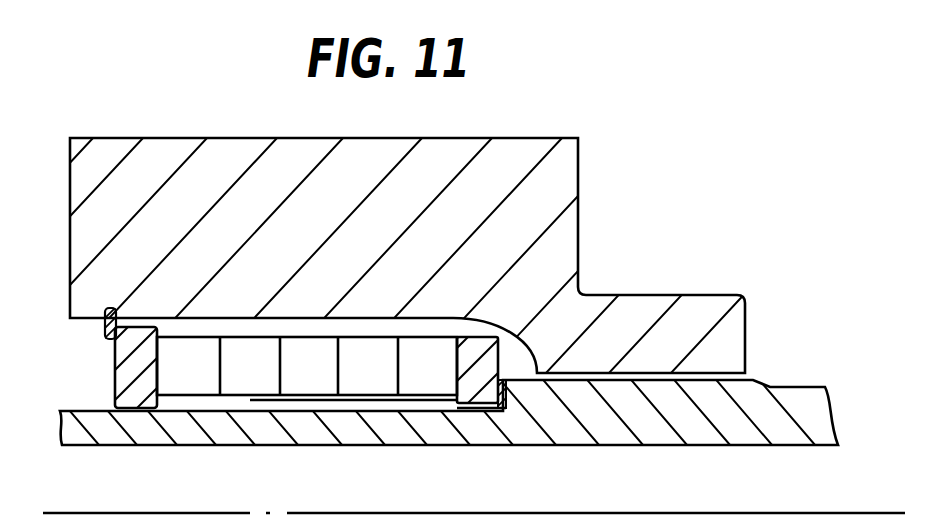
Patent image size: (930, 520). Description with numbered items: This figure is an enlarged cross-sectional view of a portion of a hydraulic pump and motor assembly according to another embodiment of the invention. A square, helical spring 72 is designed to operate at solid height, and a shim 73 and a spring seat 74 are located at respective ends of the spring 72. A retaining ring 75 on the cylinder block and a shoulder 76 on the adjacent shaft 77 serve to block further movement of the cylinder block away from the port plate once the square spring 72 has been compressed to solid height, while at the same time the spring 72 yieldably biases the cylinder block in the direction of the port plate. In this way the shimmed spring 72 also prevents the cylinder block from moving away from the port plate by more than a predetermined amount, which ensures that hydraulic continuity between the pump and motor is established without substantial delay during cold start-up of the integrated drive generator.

The square helical spring 72 is at (247, 412).
The shim 73 is at (108, 365).
The spring seat 74 is at (479, 421).
The retaining ring 75 is at (108, 312).
The shoulder 76 is at (504, 404).
The shaft 77 is at (763, 408).